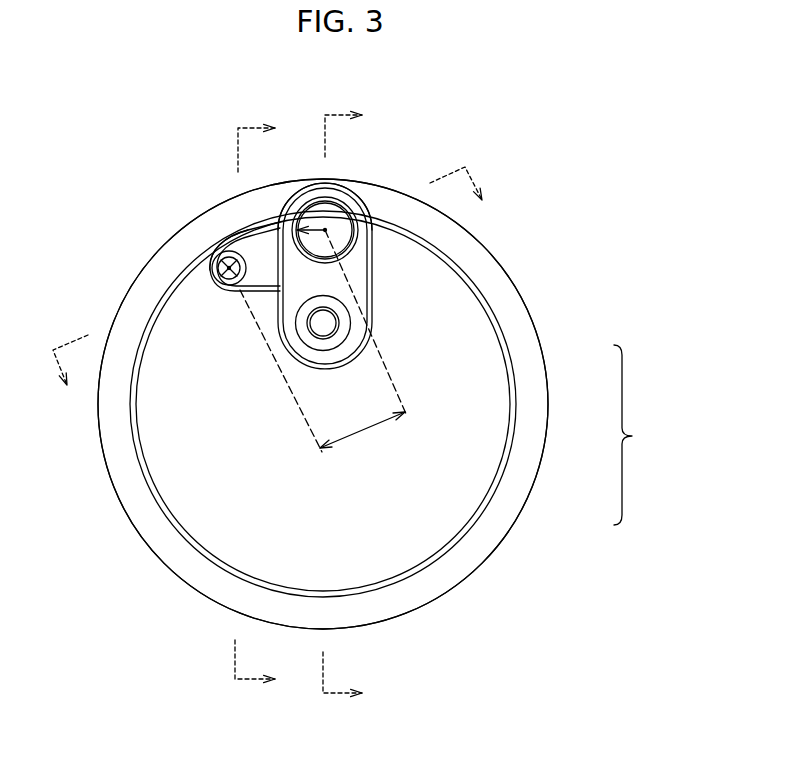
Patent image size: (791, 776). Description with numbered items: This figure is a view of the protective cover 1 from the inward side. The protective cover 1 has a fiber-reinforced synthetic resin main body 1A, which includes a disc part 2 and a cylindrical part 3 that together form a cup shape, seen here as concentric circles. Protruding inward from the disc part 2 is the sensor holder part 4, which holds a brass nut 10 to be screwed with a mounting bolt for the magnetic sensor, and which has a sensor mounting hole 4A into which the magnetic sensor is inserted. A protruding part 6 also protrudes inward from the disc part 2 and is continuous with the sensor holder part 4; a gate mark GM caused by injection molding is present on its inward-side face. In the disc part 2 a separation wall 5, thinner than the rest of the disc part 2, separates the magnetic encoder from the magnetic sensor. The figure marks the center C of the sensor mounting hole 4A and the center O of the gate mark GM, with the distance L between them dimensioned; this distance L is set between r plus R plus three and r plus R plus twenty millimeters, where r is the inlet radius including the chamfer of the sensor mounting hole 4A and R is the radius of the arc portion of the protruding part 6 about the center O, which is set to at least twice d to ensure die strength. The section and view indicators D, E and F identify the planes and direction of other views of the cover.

The protective cover 1 is at (518, 253).
The main body 1A is at (640, 435).
The disc part 2 is at (458, 438).
The cylindrical part 3 is at (490, 563).
The sensor holder part 4 is at (377, 324).
The sensor mounting hole 4A is at (352, 205).
The separation wall 5 is at (343, 238).
The protruding part 6 is at (237, 295).
The nut 10 is at (347, 312).
The gate mark GM is at (238, 265).
The center of the sensor mounting hole C is at (325, 230).
The center of the gate O is at (228, 278).
The radius of the arc portion R is at (217, 250).
The inlet radius r is at (311, 222).
The distance L is at (323, 341).
The section line D is at (265, 405).
The view direction E is at (273, 290).
The section line F is at (352, 405).